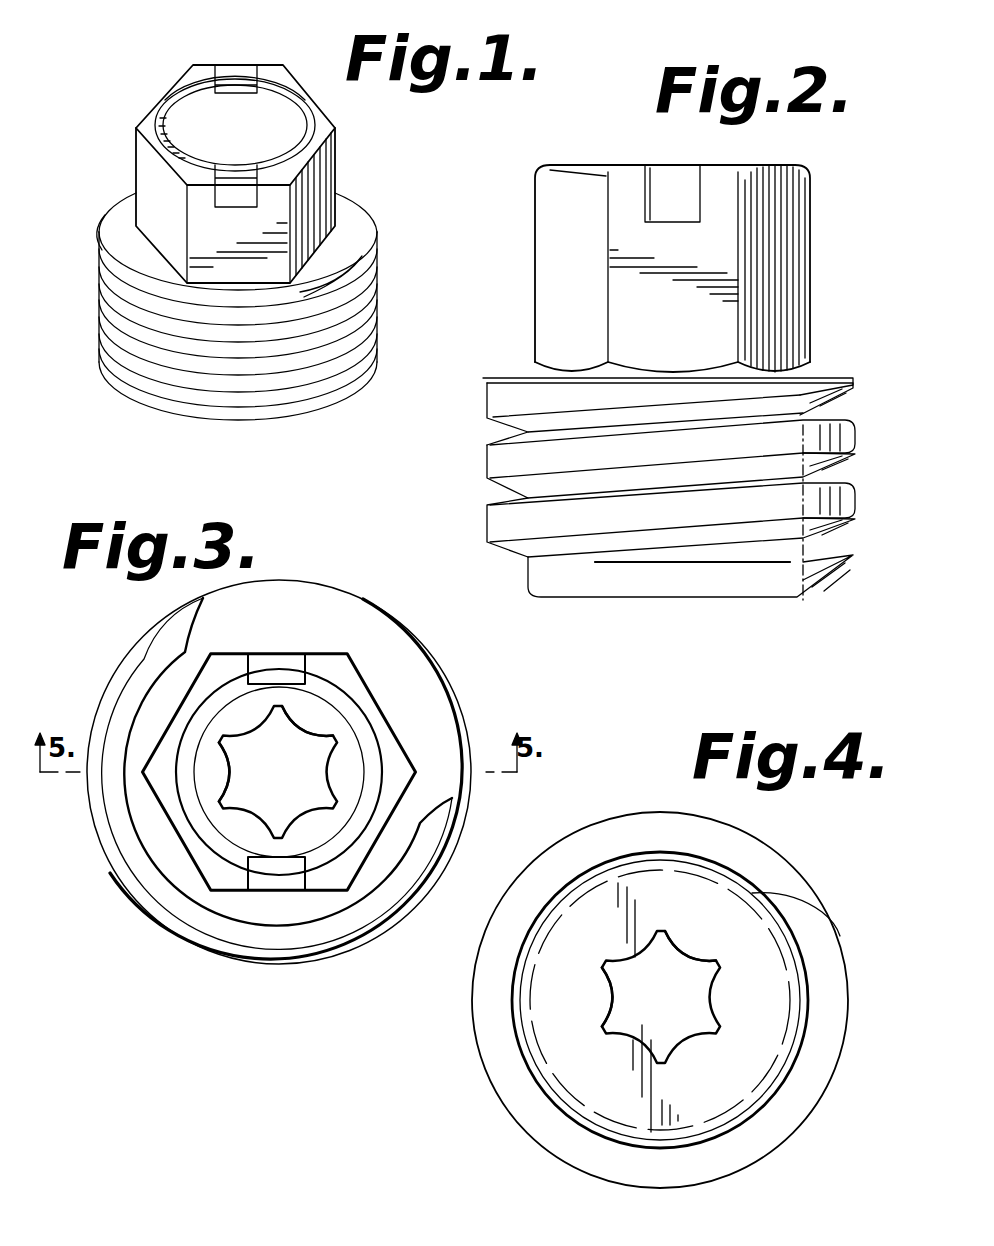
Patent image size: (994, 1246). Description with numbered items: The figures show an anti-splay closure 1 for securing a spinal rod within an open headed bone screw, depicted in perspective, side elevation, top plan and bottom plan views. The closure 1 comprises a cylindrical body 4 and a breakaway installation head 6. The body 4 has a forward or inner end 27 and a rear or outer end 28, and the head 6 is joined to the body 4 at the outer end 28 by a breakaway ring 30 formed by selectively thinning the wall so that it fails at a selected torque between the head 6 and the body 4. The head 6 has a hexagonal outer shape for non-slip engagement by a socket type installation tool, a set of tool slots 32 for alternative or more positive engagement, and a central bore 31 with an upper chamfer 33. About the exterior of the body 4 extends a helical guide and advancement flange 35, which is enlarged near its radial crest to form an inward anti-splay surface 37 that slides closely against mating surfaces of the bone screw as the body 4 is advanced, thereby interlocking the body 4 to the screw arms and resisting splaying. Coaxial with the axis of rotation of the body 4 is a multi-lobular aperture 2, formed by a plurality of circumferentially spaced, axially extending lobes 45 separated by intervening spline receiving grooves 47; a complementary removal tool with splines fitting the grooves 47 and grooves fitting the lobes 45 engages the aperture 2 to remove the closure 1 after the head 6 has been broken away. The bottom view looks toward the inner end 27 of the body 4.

In FIG. 1, the anti-splay closure 1 is at (88, 160).
In FIG. 2, the anti-splay closure 1 is at (450, 411).
In FIG. 3, the anti-splay closure 1 is at (119, 934).
In FIG. 3, the multi-lobular aperture 2 is at (248, 807).
In FIG. 4, the multi-lobular aperture 2 is at (620, 998).
In FIG. 1, the body 4 is at (120, 374).
In FIG. 2, the body 4 is at (484, 468).
In FIG. 3, the body 4 is at (217, 927).
In FIG. 4, the body 4 is at (492, 1082).
In FIG. 1, the breakaway installation head 6 is at (146, 211).
In FIG. 2, the breakaway installation head 6 is at (548, 240).
In FIG. 3, the breakaway installation head 6 is at (195, 870).
In FIG. 2, the inner end 27 is at (662, 598).
In FIG. 4, the inner end 27 is at (727, 905).
In FIG. 1, the outer end 28 is at (353, 213).
In FIG. 2, the outer end 28 is at (505, 380).
In FIG. 3, the outer end 28 is at (403, 672).
In FIG. 2, the breakaway ring 30 is at (805, 375).
In FIG. 1, the central bore 31 is at (273, 92).
In FIG. 1, the tool slots 32 is at (237, 84).
In FIG. 2, the tool slots 32 is at (700, 196).
In FIG. 3, the tool slots 32 is at (258, 669).
In FIG. 1, the upper chamfer 33 is at (306, 94).
In FIG. 1, the guide and advancement flange 35 is at (125, 289).
In FIG. 2, the guide and advancement flange 35 is at (877, 452).
In FIG. 3, the guide and advancement flange 35 is at (360, 940).
In FIG. 4, the guide and advancement flange 35 is at (817, 933).
In FIG. 1, the inward anti-splay surface 37 is at (112, 260).
In FIG. 3, the inward anti-splay surface 37 is at (406, 890).
In FIG. 3, the lobes 45 is at (306, 732).
In FIG. 4, the lobes 45 is at (690, 975).
In FIG. 3, the spline receiving grooves 47 is at (232, 757).
In FIG. 4, the spline receiving grooves 47 is at (612, 1030).